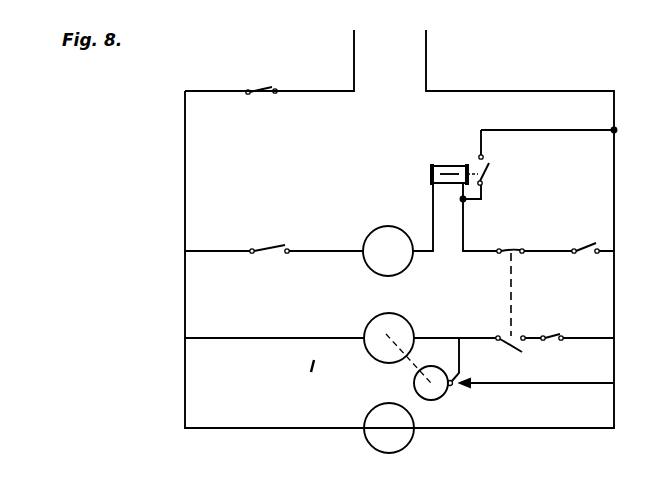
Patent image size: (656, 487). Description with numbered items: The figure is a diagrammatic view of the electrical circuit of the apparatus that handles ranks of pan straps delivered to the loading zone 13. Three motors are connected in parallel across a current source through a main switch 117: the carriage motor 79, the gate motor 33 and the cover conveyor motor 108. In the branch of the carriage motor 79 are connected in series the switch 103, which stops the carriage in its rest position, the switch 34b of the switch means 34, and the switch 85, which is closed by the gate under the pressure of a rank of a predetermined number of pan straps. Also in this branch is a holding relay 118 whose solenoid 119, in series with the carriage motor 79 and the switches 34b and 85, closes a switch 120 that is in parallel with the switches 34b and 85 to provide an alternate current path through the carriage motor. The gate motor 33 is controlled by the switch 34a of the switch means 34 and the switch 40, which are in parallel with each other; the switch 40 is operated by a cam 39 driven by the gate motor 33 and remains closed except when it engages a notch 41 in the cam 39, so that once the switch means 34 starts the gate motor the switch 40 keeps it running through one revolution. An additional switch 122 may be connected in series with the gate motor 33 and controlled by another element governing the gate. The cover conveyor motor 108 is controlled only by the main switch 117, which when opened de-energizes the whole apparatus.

The main switch 117 is at (264, 92).
The switch 103 is at (271, 247).
The carriage motor 79 is at (367, 266).
The holding relay 118 is at (447, 164).
The solenoid 119 is at (431, 177).
The switch 120 is at (490, 173).
The switch 34b is at (512, 249).
The switch 85 is at (588, 247).
The switch means 34 is at (517, 301).
The gate motor 33 is at (405, 320).
The switch 122 is at (556, 337).
The switch 34a is at (514, 351).
The switch 40 is at (457, 378).
The notch 41 is at (453, 387).
The cam 39 is at (429, 401).
The cover conveyor motor 108 is at (367, 432).
The loading zone 13 is at (408, 478).